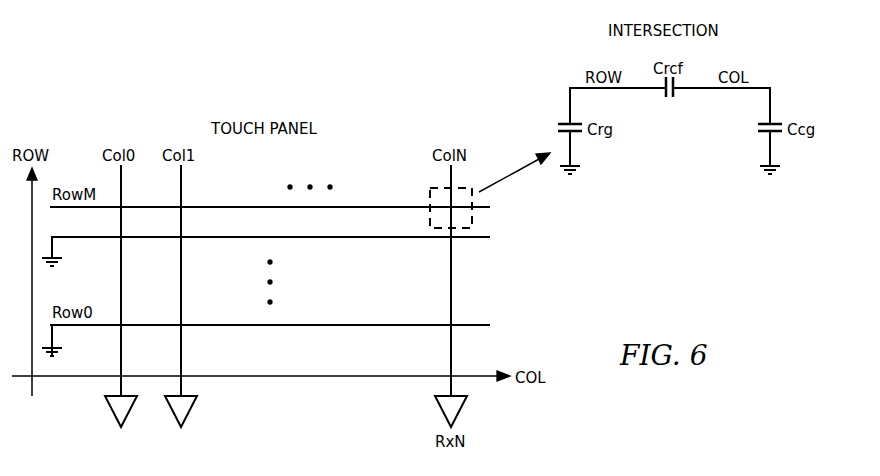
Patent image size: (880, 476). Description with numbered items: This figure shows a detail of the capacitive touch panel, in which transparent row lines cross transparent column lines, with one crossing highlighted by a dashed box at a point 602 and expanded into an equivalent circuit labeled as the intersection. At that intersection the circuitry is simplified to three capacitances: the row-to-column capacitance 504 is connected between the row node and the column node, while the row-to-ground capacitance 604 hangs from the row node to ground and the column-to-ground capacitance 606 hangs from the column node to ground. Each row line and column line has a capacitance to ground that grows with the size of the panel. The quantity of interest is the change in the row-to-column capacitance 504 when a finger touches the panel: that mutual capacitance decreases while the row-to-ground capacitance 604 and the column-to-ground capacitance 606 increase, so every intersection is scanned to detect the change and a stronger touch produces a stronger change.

The intersection point 602 is at (428, 192).
The row-to-column capacitance 504 is at (669, 108).
The row-to-ground capacitance 604 is at (558, 127).
The column-to-ground capacitance 606 is at (758, 128).